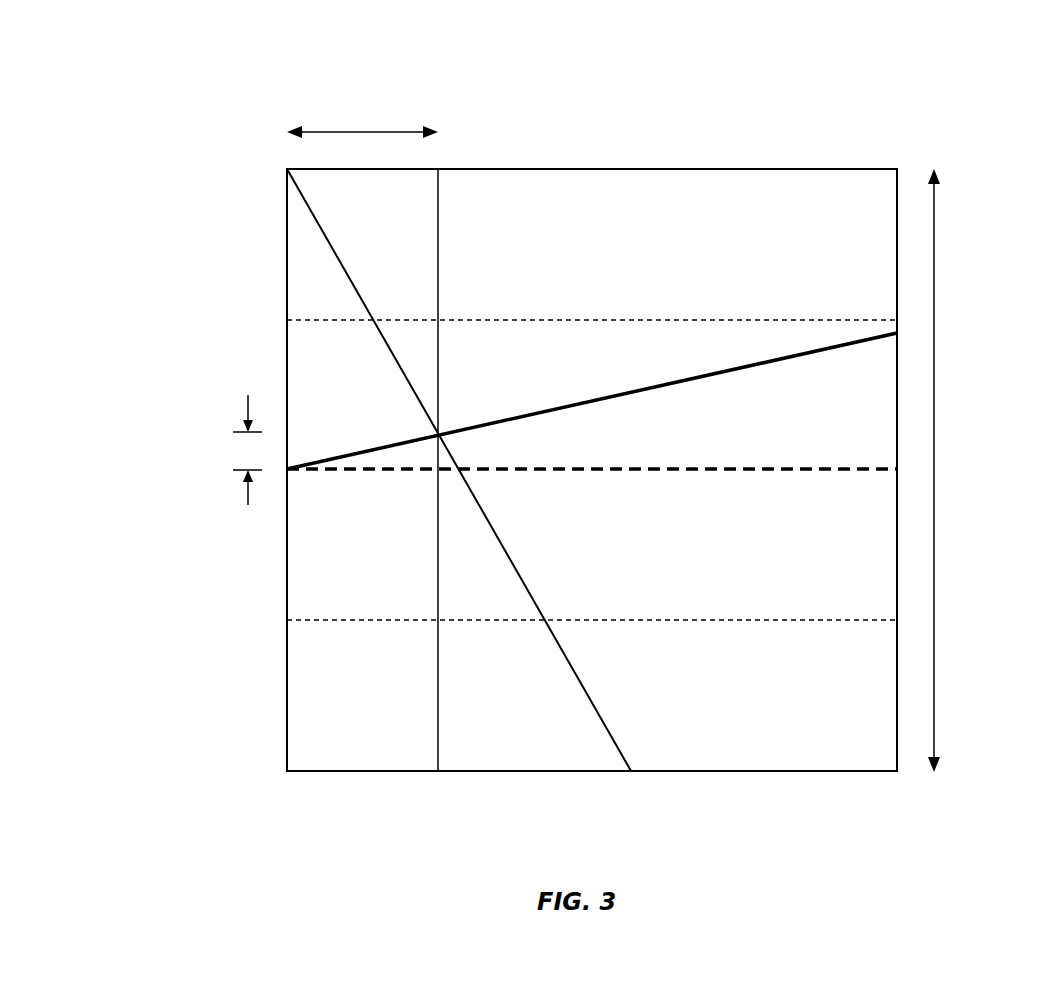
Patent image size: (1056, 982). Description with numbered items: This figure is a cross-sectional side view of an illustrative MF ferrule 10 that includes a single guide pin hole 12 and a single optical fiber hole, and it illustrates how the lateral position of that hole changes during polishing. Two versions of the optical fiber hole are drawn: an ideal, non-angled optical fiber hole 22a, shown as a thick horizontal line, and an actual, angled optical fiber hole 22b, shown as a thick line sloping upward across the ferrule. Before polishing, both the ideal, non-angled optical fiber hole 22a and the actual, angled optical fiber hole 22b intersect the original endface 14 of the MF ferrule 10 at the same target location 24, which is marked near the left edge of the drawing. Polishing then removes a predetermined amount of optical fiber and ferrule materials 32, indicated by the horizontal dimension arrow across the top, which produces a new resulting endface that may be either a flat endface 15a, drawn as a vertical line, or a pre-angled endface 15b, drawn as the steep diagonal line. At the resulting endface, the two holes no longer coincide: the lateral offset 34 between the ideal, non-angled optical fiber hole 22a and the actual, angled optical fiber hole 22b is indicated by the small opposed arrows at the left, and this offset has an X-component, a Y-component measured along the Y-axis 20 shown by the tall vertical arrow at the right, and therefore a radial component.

The MF ferrule 10 is at (746, 169).
The guide pin hole 12 is at (745, 320).
The endface 14 is at (270, 226).
The flat resulting endface 15a is at (428, 600).
The pre-angled resulting endface 15b is at (518, 600).
The Y-axis 20 is at (934, 530).
The ideal, non-angled optical fiber hole 22a is at (865, 468).
The actual, angled optical fiber hole 22b is at (862, 338).
The target location 24 is at (270, 490).
The optical fiber and ferrule materials 32 is at (363, 132).
The lateral offset 34 is at (226, 416).